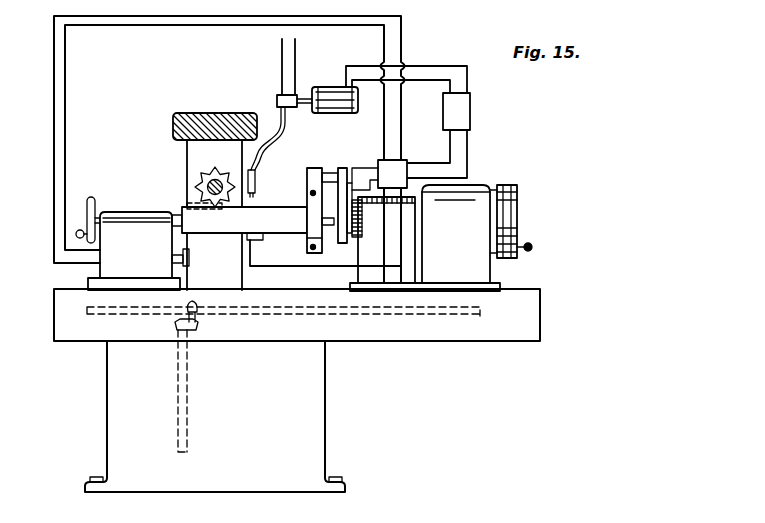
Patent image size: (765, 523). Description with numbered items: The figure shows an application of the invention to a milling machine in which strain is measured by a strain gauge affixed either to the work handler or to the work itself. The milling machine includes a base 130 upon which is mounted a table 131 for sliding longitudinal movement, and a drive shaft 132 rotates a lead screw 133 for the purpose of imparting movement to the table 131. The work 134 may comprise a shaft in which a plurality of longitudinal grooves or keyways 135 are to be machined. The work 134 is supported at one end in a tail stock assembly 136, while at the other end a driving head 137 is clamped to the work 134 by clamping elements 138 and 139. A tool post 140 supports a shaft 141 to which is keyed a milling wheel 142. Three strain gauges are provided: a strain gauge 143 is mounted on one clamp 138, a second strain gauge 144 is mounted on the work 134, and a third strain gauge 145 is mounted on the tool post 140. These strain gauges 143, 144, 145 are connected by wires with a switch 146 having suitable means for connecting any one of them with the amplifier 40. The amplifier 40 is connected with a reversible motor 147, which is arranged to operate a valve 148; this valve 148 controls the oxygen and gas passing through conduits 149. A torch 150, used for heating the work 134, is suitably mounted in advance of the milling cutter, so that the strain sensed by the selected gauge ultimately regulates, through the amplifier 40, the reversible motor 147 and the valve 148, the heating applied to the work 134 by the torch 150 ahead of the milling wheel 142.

The amplifier 40 is at (471, 110).
The base 130 is at (318, 413).
The table 131 is at (443, 337).
The drive shaft 132 is at (190, 372).
The lead screw 133 is at (273, 310).
The work 134 is at (203, 226).
The keyways 135 is at (185, 205).
The tail stock assembly 136 is at (108, 200).
The driving head 137 is at (481, 185).
The clamping element 138 is at (349, 154).
The clamping element 139 is at (315, 168).
The tool post 140 is at (202, 148).
The shaft 141 is at (207, 188).
The milling wheel 142 is at (197, 172).
The strain gauge 143 is at (352, 182).
The second strain gauge 144 is at (258, 233).
The third strain gauge 145 is at (189, 262).
The switch 146 is at (403, 161).
The reversible motor 147 is at (336, 88).
The valve 148 is at (279, 94).
The conduits 149 is at (297, 62).
The torch 150 is at (256, 172).